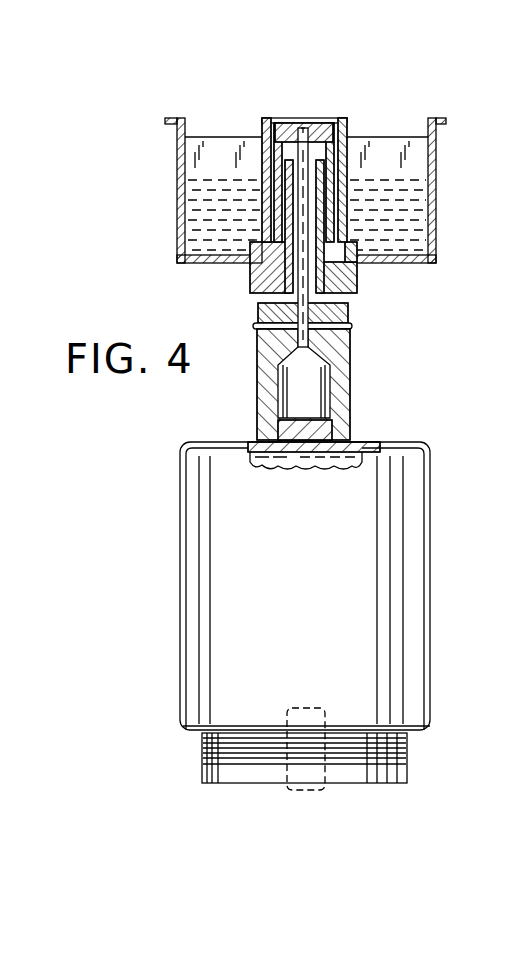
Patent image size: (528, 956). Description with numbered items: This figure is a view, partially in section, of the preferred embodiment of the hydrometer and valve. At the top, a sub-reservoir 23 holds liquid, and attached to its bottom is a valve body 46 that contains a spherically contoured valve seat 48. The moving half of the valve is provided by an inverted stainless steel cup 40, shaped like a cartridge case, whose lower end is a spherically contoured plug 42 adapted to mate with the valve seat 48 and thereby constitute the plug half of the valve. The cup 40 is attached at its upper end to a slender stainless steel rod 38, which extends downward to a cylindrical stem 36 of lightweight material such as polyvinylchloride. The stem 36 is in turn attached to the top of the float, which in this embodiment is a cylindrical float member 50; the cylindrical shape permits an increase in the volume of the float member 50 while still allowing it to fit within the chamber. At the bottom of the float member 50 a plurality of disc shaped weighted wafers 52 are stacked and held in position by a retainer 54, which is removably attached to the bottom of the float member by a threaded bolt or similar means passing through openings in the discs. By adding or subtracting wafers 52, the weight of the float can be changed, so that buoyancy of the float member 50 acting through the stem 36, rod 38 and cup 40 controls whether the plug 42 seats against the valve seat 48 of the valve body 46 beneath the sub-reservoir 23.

The sub-reservoir 23 is at (436, 163).
The cylindrical stem 36 is at (258, 405).
The slender stainless steel rod 38 is at (336, 270).
The inverted stainless steel cup 40 is at (319, 126).
The spherically contoured plug 42 is at (332, 237).
The valve body 46 is at (306, 272).
The spherically contoured valve seat 48 is at (275, 250).
The cylindrical float member 50 is at (405, 523).
The disc shaped weighted wafers 52 is at (408, 741).
The retainer 54 is at (214, 772).